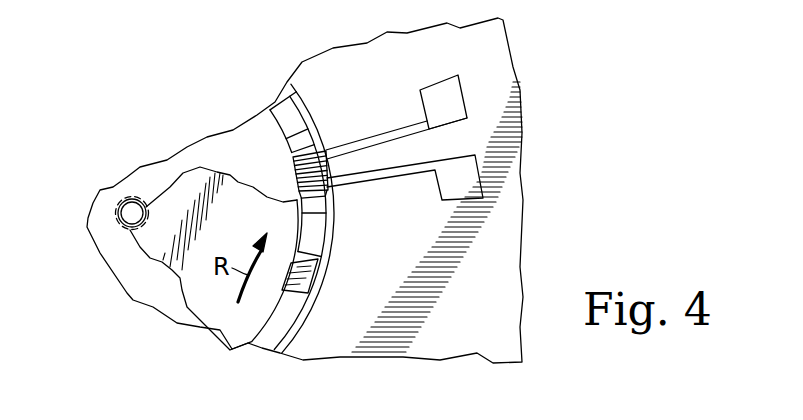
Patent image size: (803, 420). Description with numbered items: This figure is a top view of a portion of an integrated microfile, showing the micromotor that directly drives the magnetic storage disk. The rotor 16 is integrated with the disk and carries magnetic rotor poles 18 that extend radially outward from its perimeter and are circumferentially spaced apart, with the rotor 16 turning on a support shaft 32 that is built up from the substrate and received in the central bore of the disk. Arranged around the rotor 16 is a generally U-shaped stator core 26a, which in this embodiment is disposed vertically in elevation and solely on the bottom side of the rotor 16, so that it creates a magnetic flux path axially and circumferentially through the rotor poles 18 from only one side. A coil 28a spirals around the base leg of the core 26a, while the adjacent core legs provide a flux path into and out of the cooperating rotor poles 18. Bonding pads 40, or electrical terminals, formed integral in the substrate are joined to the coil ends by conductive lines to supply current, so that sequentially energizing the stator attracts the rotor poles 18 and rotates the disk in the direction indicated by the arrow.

The rotor 16 is at (255, 332).
The magnetic rotor pole 18 is at (302, 283).
The U-shaped stator core 26a is at (290, 117).
The coil 28a is at (323, 167).
The support shaft 32 is at (132, 213).
The bonding pad 40 is at (478, 173).